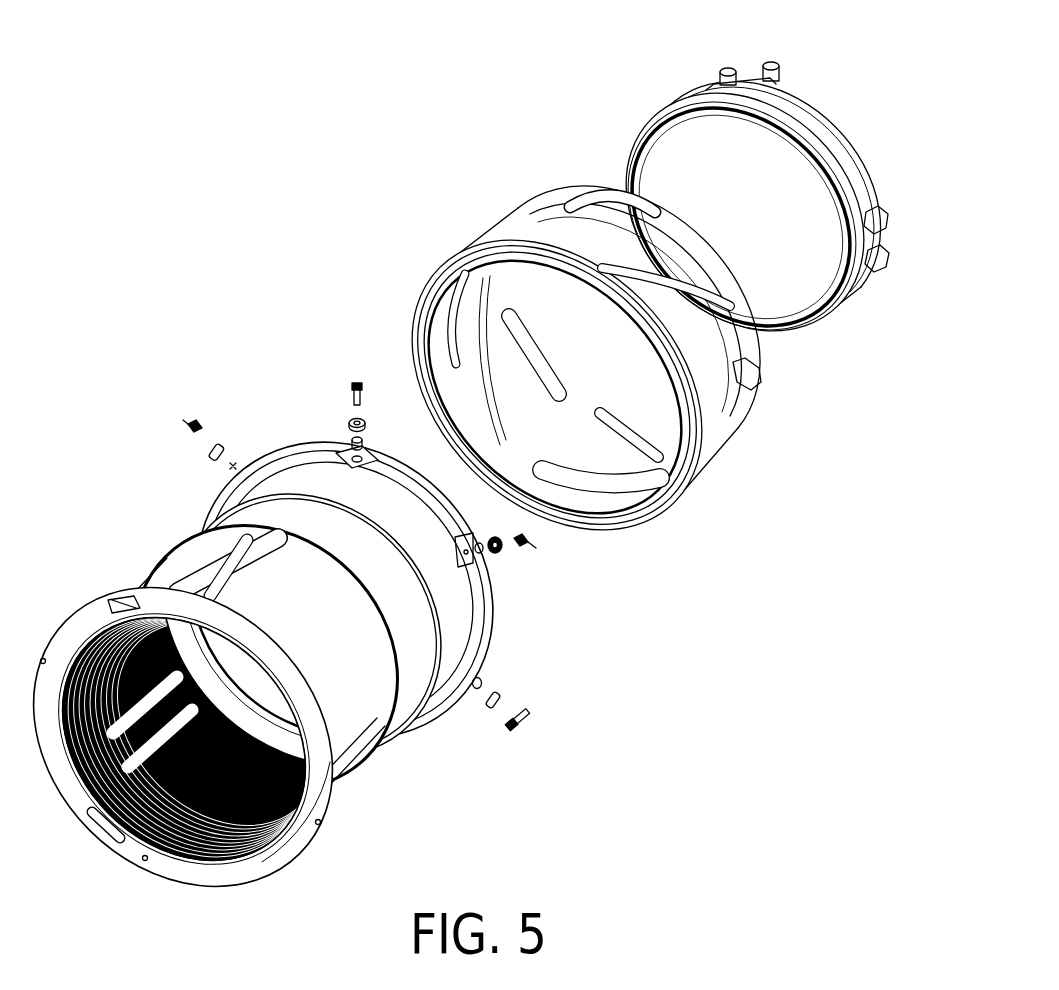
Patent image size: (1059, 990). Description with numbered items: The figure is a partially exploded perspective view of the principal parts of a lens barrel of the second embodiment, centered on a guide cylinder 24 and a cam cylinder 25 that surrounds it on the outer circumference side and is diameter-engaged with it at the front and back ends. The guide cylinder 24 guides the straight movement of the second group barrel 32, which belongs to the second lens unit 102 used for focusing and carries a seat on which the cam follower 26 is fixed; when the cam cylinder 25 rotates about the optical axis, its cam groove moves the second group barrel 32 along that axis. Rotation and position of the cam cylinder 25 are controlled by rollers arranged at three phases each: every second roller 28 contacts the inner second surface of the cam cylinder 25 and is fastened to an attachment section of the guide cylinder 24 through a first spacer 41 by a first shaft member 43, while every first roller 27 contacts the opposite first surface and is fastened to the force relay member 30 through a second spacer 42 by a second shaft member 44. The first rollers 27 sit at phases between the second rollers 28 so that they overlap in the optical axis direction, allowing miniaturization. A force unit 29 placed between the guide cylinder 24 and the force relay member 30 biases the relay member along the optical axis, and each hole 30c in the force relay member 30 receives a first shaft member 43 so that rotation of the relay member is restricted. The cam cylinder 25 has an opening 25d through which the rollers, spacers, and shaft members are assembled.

The guide cylinder 24 is at (340, 725).
The cam cylinder 25 is at (737, 350).
The opening 25d is at (495, 245).
The cam follower 26 is at (760, 63).
The first roller 27 is at (210, 462).
The second roller 28 is at (345, 410).
The force unit 29 is at (250, 490).
The force relay member 30 is at (305, 445).
The hole 30c is at (368, 448).
The second group barrel 32 is at (710, 100).
The first spacer 41 is at (348, 440).
The second spacer 42 is at (230, 474).
The first shaft member 43 is at (352, 380).
The second shaft member 44 is at (183, 420).
The second lens unit 102 is at (702, 145).